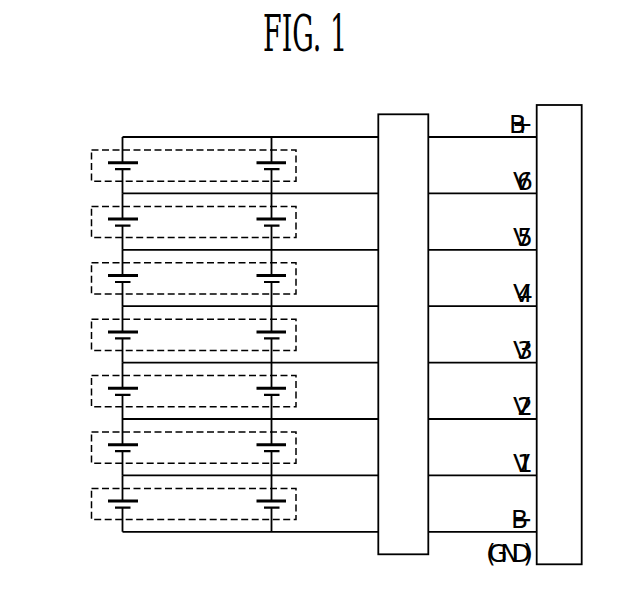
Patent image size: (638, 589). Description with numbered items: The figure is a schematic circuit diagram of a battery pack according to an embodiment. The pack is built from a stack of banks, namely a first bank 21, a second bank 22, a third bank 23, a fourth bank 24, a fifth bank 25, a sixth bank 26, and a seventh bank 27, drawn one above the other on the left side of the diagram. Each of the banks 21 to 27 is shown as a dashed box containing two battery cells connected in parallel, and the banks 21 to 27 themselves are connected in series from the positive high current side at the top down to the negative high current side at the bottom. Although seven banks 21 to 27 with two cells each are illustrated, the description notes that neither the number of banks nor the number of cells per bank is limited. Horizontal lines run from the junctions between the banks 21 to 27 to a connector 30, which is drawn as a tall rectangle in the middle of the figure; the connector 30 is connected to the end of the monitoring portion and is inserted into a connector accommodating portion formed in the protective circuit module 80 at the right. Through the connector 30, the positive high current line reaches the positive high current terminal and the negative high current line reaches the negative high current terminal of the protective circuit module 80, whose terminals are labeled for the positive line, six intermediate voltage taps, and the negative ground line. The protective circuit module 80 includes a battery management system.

The first bank 21 is at (92, 165).
The second bank 22 is at (92, 221).
The third bank 23 is at (92, 278).
The fourth bank 24 is at (92, 334).
The fifth bank 25 is at (92, 390).
The sixth bank 26 is at (92, 447).
The seventh bank 27 is at (92, 503).
The connector 30 is at (405, 114).
The protective circuit module 80 is at (560, 105).